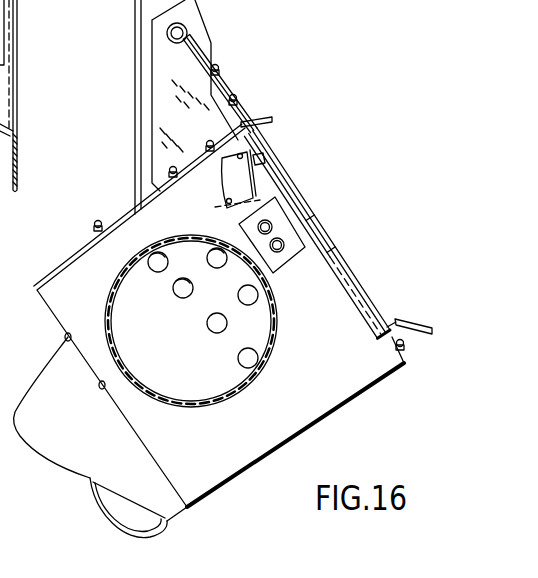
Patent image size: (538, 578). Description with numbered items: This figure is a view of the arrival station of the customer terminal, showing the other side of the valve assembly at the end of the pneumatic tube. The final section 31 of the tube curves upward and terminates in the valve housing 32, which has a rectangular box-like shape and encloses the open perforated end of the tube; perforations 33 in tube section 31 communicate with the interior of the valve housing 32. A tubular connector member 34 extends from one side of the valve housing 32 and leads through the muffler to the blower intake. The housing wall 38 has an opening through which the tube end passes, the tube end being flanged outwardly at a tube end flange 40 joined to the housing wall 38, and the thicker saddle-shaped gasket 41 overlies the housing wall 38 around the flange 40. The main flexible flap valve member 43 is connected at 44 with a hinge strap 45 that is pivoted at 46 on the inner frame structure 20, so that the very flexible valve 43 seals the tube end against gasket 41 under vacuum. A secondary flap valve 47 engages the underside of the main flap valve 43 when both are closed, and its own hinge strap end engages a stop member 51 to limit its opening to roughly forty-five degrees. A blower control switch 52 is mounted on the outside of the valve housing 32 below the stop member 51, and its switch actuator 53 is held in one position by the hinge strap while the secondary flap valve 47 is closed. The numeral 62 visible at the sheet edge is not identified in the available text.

The inner open frame structure 20 is at (0, 97).
The final section of tube 31 is at (85, 438).
The valve housing 32 is at (250, 453).
The perforations 33 is at (243, 362).
The tubular connector member 34 is at (262, 375).
The housing wall 38 is at (373, 384).
The tube end flange 40 is at (318, 230).
The saddle-shaped gasket 41 is at (363, 297).
The main flexible flap valve member 43 is at (312, 205).
The connection of flap valve to hinge strap 44 is at (238, 93).
The hinge strap 45 is at (200, 52).
The hinge strap pivot 46 is at (182, 30).
The secondary flap valve 47 is at (282, 173).
The stop member 51 is at (262, 125).
The blower control switch 52 is at (228, 187).
The switch actuator 53 is at (258, 162).
The element of adjacent figure 62 is at (7, 577).